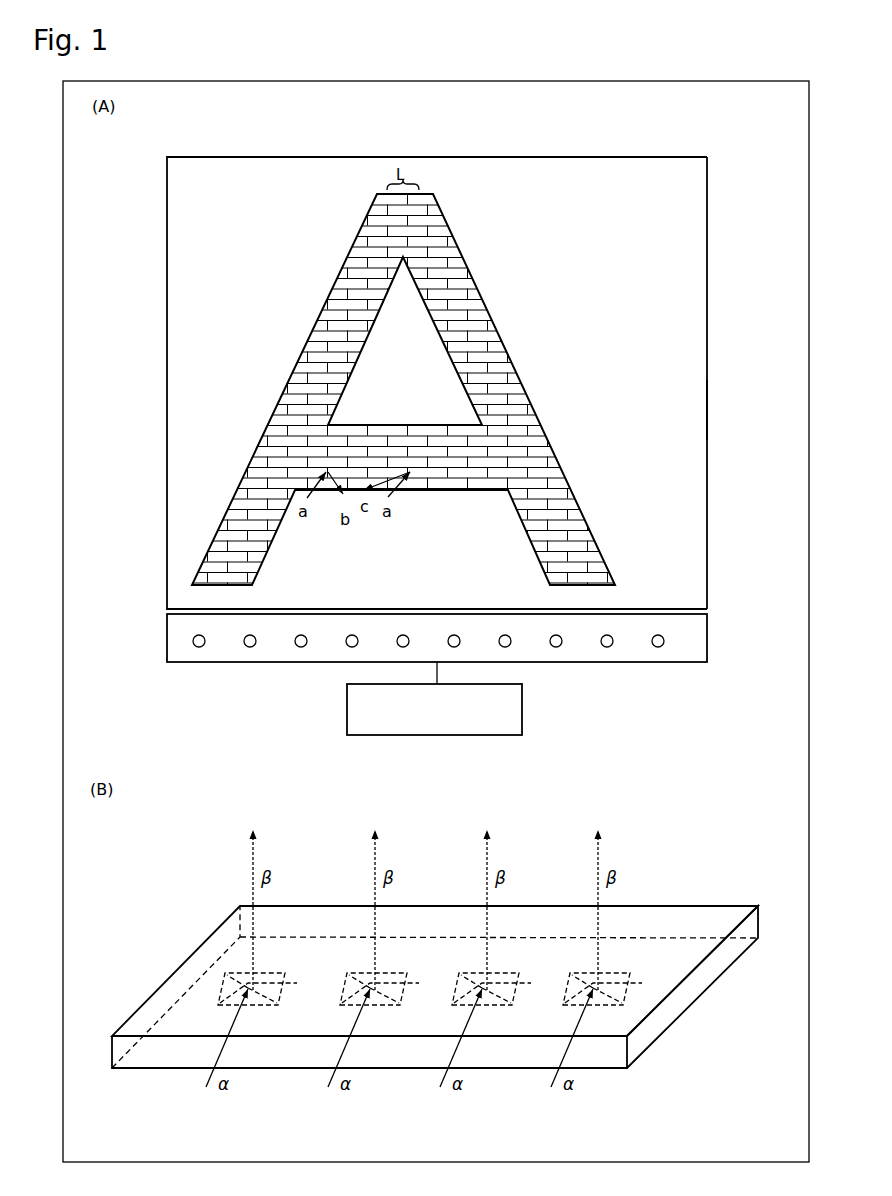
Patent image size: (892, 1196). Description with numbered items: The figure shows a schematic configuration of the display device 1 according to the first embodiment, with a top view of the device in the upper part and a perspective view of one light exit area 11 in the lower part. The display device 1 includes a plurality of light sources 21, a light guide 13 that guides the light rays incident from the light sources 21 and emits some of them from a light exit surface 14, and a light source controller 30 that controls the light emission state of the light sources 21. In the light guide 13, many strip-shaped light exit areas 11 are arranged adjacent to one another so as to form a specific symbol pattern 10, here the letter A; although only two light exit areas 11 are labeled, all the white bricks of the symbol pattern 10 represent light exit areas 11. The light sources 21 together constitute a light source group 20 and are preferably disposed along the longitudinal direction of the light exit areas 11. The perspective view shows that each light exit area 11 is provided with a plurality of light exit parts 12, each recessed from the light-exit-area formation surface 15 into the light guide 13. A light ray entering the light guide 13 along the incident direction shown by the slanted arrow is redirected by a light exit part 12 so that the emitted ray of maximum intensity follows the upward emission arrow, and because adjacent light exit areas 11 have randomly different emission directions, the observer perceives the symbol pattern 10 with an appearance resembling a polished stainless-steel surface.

The display device 1 is at (190, 138).
The symbol pattern 10 is at (498, 327).
The light exit area 11 is at (440, 210).
The light exit part 12 is at (265, 1003).
The light guide 13 is at (707, 216).
The light exit surface 14 is at (695, 408).
The light-exit-area formation surface 15 is at (667, 1017).
The light source group 20 is at (707, 635).
The light source 21 is at (607, 648).
The light source controller 30 is at (522, 703).